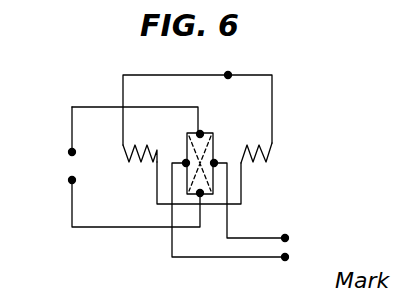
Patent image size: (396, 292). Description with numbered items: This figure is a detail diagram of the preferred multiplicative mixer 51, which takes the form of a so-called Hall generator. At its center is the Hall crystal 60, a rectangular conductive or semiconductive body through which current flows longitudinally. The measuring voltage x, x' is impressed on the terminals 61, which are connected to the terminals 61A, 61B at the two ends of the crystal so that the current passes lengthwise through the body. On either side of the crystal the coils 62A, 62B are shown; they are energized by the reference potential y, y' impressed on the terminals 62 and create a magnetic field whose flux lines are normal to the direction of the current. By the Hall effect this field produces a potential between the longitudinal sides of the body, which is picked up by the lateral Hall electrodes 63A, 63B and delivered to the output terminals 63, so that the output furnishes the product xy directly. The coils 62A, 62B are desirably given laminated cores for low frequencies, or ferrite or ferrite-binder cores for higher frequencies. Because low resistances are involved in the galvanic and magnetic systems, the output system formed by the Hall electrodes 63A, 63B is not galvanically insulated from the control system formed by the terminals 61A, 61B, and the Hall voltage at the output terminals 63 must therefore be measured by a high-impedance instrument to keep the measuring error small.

The multiplicative mixer 51 is at (292, 80).
The Hall crystal 60 is at (187, 142).
The terminals 61 is at (67, 182).
The terminal 61A is at (211, 124).
The terminal 61B is at (200, 194).
The terminals 62 is at (226, 79).
The coil 62A is at (145, 166).
The coil 62B is at (258, 166).
The output terminals 63 is at (282, 250).
The Hall electrode 63A is at (184, 164).
The Hall electrode 63B is at (216, 162).